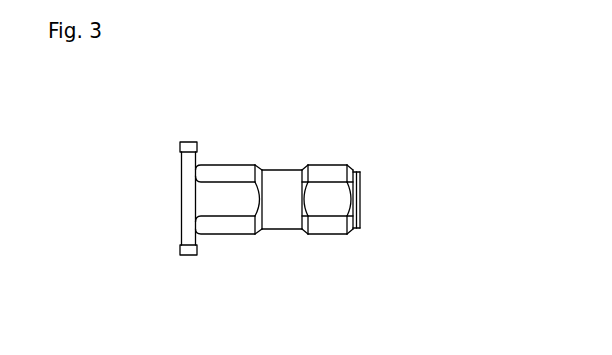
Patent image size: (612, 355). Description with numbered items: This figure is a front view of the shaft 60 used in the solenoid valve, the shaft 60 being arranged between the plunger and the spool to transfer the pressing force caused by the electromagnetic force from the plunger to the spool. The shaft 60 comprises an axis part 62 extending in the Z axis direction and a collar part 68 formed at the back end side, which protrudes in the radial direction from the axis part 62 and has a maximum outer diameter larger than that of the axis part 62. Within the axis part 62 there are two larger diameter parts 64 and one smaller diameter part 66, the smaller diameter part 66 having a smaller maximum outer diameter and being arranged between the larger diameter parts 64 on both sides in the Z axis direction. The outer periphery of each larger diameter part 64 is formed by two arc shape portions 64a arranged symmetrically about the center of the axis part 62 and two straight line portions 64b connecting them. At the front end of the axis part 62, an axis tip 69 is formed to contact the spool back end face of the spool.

The shaft 60 is at (313, 95).
The axis part 62 is at (372, 156).
The larger diameter part 64 is at (318, 153).
The arc shape portion 64a is at (238, 226).
The straight line portion 64b is at (222, 195).
The smaller diameter part 66 is at (278, 213).
The collar part 68 is at (188, 142).
The axis tip 69 is at (357, 228).